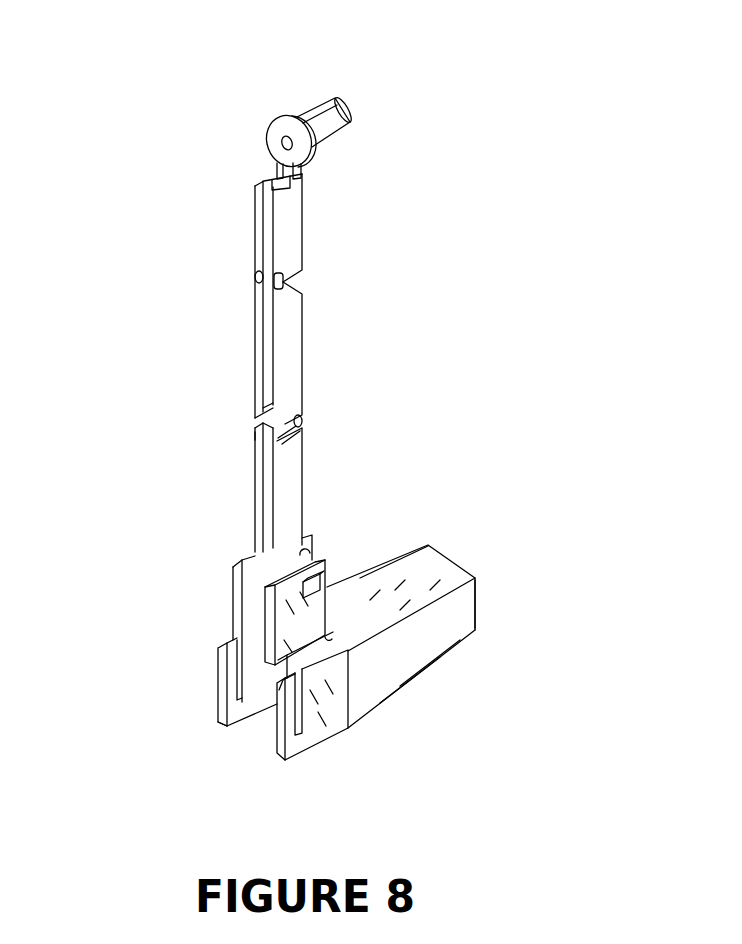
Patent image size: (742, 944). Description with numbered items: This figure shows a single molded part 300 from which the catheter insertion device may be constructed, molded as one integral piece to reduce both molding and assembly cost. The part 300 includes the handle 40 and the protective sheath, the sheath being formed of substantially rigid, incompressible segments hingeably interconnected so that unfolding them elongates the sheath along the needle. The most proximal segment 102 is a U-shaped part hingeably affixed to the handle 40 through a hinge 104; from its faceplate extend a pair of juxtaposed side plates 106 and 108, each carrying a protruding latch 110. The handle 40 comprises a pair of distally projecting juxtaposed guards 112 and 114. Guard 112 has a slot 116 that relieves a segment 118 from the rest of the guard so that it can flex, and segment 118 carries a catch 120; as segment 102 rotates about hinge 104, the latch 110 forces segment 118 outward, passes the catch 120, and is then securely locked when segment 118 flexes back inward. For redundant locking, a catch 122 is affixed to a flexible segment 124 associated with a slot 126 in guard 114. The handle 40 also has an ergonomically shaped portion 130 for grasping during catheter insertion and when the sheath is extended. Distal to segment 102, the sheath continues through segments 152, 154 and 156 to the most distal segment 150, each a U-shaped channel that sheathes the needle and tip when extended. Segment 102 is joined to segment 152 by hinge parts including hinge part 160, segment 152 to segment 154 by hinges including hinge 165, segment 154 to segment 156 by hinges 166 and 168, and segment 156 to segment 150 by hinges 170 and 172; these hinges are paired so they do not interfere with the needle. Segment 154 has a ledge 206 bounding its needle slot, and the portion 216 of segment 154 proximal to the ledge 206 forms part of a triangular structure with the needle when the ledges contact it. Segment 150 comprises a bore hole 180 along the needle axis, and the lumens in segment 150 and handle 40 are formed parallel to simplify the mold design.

The handle 40 is at (431, 547).
The most proximal segment 102 is at (478, 580).
The hinge 104 is at (318, 621).
The side plate 106 is at (425, 545).
The side plate 108 is at (266, 602).
The protruding latch 110 is at (325, 576).
The guard 112 is at (348, 728).
The guard 114 is at (220, 723).
The slot 116 is at (285, 761).
The segment 118 is at (280, 751).
The catch 120 is at (292, 702).
The catch 122 is at (240, 607).
The flexible segment 124 is at (218, 650).
The slot 126 is at (227, 694).
The portion 130 is at (480, 633).
The segment 150 is at (346, 98).
The segment 152 is at (303, 463).
The segment 154 is at (303, 348).
The segment 156 is at (302, 231).
The hinge part 160 is at (321, 558).
The hinge 165 is at (303, 420).
The hinge 166 is at (255, 279).
The hinge 168 is at (277, 178).
The hinge 170 is at (302, 169).
The hinge 172 is at (268, 152).
The bore hole 180 is at (268, 135).
The ledge 206 is at (255, 370).
The portion 216 is at (255, 412).
The single molded part 300 is at (573, 352).